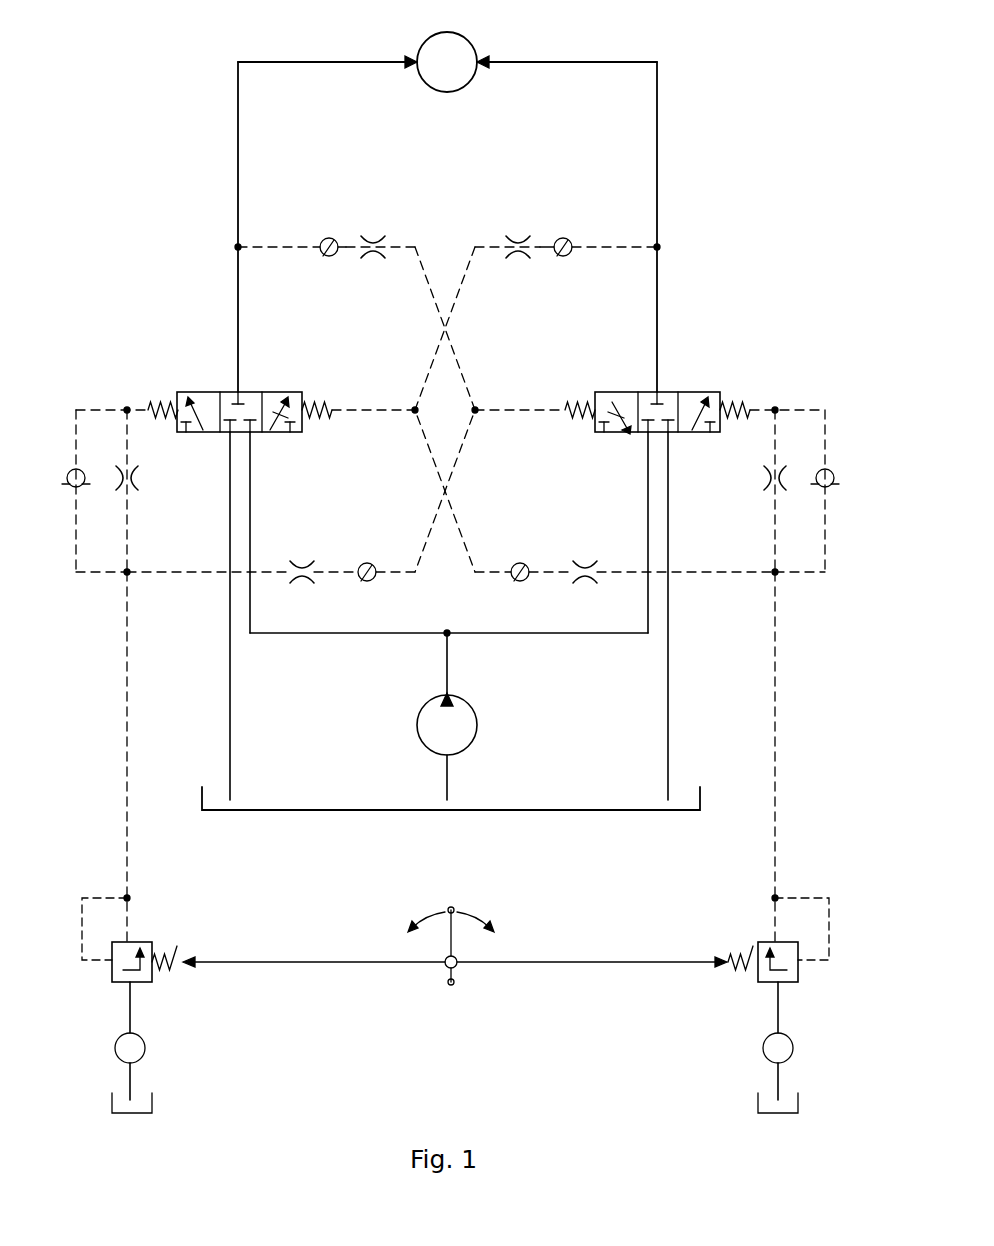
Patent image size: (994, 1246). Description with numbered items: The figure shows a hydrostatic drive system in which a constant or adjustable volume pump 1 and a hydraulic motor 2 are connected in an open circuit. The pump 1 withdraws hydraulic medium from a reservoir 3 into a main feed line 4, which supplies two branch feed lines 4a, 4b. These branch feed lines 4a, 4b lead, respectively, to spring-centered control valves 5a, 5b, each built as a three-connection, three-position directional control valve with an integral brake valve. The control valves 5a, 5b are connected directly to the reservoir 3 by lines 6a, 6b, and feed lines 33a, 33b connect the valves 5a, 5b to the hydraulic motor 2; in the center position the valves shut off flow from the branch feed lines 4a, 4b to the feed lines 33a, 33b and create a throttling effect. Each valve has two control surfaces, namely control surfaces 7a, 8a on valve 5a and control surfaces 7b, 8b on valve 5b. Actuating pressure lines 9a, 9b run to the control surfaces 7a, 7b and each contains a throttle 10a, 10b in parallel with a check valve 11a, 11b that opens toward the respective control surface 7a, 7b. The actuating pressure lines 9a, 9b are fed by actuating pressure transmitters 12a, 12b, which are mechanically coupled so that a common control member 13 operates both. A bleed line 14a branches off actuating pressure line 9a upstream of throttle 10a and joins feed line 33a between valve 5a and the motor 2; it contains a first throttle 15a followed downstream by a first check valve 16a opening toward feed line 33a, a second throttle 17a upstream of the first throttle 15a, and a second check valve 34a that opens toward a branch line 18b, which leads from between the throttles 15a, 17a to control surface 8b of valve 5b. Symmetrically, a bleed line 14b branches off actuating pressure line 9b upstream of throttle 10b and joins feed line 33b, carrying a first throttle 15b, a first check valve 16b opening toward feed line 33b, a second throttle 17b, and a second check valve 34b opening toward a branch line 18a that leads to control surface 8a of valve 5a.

The pump 1 is at (432, 730).
The hydraulic motor 2 is at (447, 92).
The reservoir 3 is at (545, 805).
The main feed line 4 is at (447, 665).
The branch feed line 4a is at (282, 635).
The branch feed line 4b is at (603, 635).
The control valve 5a is at (215, 392).
The control valve 5b is at (690, 392).
The line 6a is at (230, 730).
The line 6b is at (668, 730).
The control surface 7a is at (178, 394).
The control surface 7b is at (720, 394).
The control surface 8a is at (300, 394).
The control surface 8b is at (596, 394).
The actuating pressure line 9a is at (127, 730).
The actuating pressure line 9b is at (775, 730).
The throttle 10a is at (131, 480).
The throttle 10b is at (770, 480).
The check valve 11a is at (76, 488).
The check valve 11b is at (825, 488).
The actuating pressure transmitter 12a is at (145, 940).
The actuating pressure transmitter 12b is at (762, 940).
The control member 13 is at (455, 930).
The bleed line 14a is at (432, 296).
The bleed line 14b is at (462, 296).
The first throttle 15a is at (373, 240).
The first throttle 15b is at (518, 240).
The first check valve 16a is at (329, 238).
The first check valve 16b is at (563, 238).
The second throttle 17a is at (302, 565).
The second throttle 17b is at (585, 565).
The branch line 18a is at (382, 412).
The branch line 18b is at (510, 412).
The feed line 33a is at (238, 170).
The feed line 33b is at (657, 170).
The second check valve 34a is at (367, 563).
The second check valve 34b is at (520, 563).